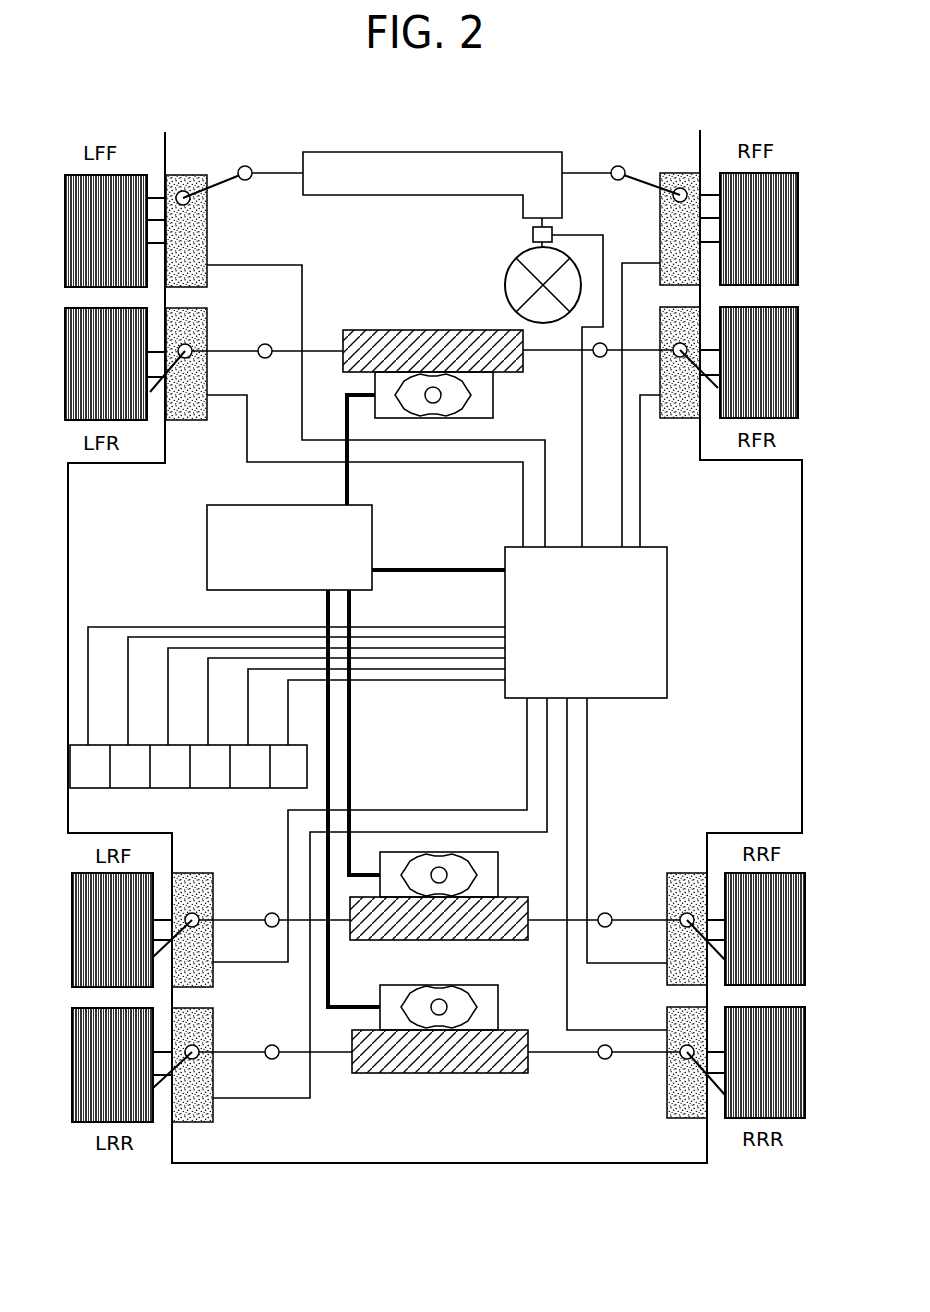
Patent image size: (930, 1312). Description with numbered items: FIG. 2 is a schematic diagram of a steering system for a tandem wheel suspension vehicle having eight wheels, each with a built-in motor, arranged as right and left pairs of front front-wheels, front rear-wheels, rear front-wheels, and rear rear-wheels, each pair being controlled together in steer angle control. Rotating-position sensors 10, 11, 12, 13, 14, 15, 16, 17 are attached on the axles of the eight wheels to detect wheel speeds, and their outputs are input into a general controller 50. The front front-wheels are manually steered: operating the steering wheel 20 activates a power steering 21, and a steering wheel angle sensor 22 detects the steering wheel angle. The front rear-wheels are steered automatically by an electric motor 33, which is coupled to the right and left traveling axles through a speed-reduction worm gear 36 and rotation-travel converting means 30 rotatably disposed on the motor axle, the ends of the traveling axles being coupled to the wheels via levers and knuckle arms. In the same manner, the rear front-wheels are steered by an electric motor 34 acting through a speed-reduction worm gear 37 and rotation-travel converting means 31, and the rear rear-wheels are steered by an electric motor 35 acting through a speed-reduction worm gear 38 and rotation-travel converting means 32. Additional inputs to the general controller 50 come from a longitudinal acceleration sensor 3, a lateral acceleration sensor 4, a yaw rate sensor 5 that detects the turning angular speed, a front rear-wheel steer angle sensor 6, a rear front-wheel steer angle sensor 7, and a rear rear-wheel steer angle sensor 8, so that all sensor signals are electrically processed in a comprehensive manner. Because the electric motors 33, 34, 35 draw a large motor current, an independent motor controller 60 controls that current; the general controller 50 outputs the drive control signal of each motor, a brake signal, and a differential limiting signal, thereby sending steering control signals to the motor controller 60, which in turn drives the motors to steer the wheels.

The longitudinal acceleration sensor 3 is at (90, 766).
The lateral acceleration sensor 4 is at (130, 766).
The yaw rate sensor 5 is at (170, 766).
The front rear-wheel steer angle sensor 6 is at (210, 766).
The rear front-wheel steer angle sensor 7 is at (250, 766).
The rear rear-wheel steer angle sensor 8 is at (288, 766).
The rotating-position sensor 10 is at (660, 214).
The rotating-position sensor 11 is at (660, 336).
The rotating-position sensor 12 is at (208, 211).
The rotating-position sensor 13 is at (208, 316).
The rotating-position sensor 14 is at (666, 886).
The rotating-position sensor 15 is at (666, 1018).
The rotating-position sensor 16 is at (213, 895).
The rotating-position sensor 17 is at (213, 1028).
The steering wheel 20 is at (505, 286).
The power steering 21 is at (521, 212).
The steering wheel angle sensor 22 is at (532, 236).
The rotation-travel converting means 30 is at (523, 360).
The rotation-travel converting means 31 is at (495, 940).
The rotation-travel converting means 32 is at (495, 1073).
The electric motor 33 is at (495, 388).
The electric motor 34 is at (498, 878).
The electric motor 35 is at (490, 1010).
The speed-reduction worm gear 36 is at (470, 400).
The speed-reduction worm gear 37 is at (470, 862).
The speed-reduction worm gear 38 is at (420, 985).
The general controller 50 is at (667, 585).
The motor controller 60 is at (207, 540).